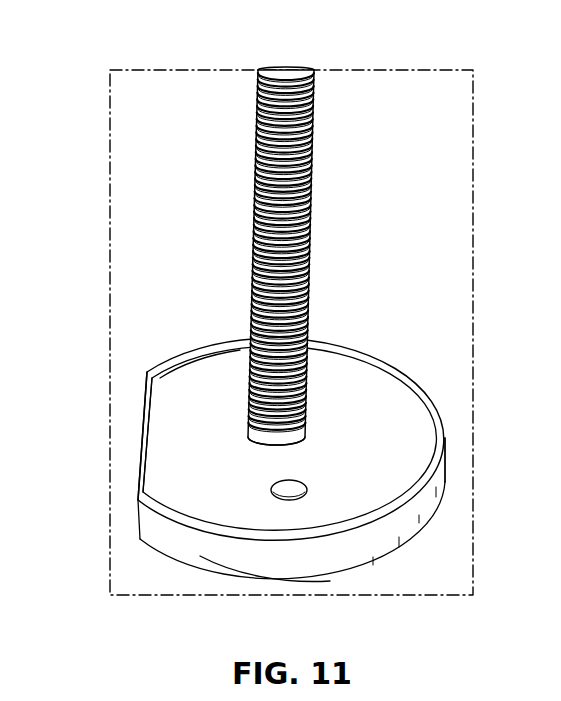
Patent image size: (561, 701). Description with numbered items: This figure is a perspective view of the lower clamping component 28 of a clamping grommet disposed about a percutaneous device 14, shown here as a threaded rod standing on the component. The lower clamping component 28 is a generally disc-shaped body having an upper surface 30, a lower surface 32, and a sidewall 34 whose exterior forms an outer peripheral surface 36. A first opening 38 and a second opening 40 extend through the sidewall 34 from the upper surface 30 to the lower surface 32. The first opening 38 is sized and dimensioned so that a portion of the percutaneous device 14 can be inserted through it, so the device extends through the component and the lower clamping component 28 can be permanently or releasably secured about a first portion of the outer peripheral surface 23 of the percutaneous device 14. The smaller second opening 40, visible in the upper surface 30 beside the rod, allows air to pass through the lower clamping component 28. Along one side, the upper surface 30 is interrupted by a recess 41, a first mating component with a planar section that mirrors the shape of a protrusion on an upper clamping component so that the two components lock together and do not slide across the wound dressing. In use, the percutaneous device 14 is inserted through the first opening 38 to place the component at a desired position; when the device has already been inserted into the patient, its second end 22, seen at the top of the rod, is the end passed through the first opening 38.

The percutaneous device 14 is at (292, 226).
The second end of the percutaneous device 22 is at (284, 70).
The outer peripheral surface of the percutaneous device 23 is at (280, 125).
The lower clamping component 28 is at (144, 432).
The upper surface 30 is at (180, 410).
The lower surface 32 is at (383, 563).
The sidewall 34 is at (437, 493).
The outer peripheral surface 36 is at (272, 565).
The first opening 38 is at (302, 430).
The second opening 40 is at (293, 500).
The recess 41 is at (155, 483).